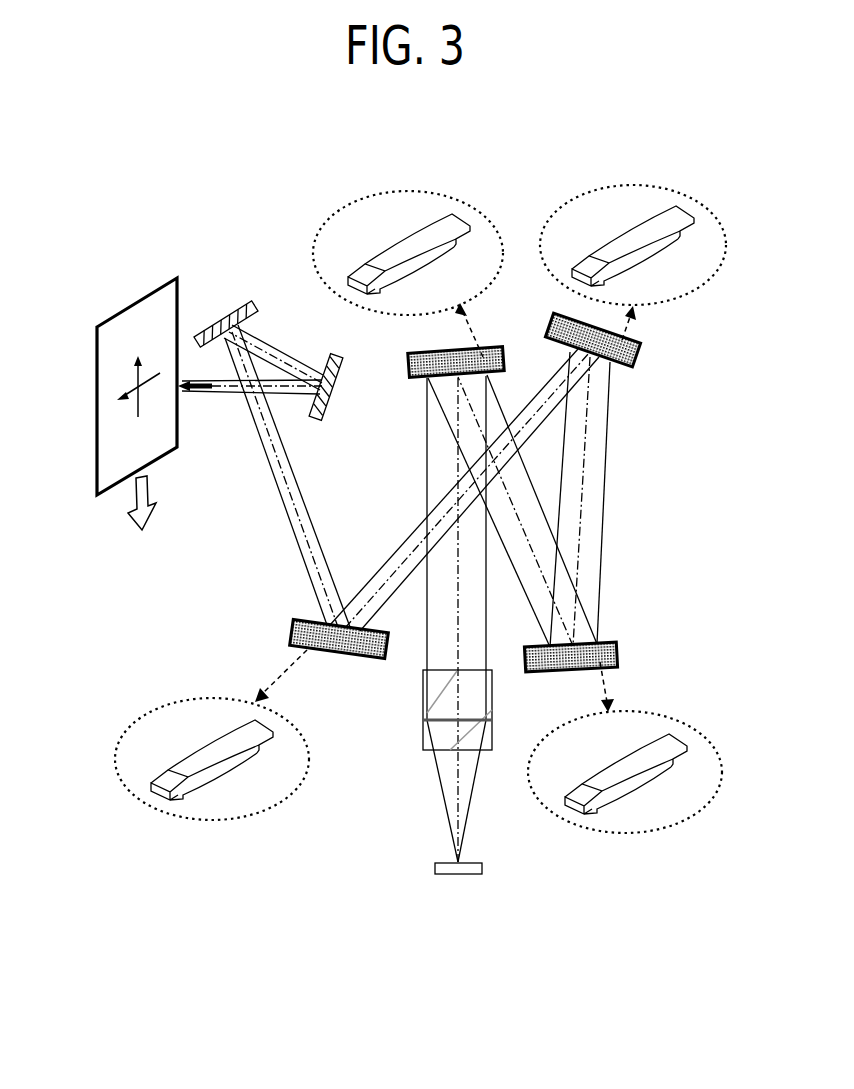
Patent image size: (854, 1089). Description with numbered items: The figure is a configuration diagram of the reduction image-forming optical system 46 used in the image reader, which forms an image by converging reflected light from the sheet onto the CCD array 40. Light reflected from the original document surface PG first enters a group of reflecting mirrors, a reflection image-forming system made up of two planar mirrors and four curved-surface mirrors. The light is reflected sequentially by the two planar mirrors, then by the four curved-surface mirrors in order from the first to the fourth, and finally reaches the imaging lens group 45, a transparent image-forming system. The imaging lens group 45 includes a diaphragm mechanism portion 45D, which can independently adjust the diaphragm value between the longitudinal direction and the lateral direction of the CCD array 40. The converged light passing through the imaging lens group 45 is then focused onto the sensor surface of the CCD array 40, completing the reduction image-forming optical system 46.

The reduction image-forming optical system 46 is at (222, 220).
The original document surface PG is at (168, 291).
The imaging lens group 45 is at (423, 728).
The diaphragm mechanism portion 45D is at (453, 718).
The CCD array 40 is at (435, 870).